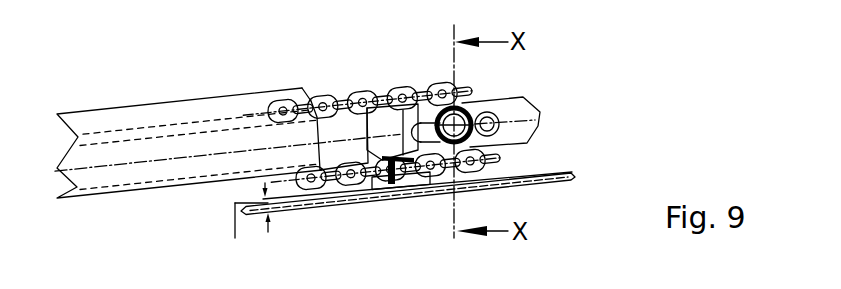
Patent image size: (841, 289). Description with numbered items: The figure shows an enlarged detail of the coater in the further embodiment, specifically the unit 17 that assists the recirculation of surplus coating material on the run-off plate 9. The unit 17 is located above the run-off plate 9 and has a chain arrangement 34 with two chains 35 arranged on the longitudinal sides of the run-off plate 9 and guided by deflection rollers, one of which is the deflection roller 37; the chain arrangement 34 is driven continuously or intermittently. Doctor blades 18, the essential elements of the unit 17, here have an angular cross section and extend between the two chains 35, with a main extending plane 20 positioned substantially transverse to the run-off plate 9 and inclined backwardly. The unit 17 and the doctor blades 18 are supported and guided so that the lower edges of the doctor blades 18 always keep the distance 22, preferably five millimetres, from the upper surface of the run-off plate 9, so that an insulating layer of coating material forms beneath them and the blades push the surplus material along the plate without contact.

The unit 17 is at (190, 84).
The chain arrangement 34 is at (315, 76).
The chains 35 is at (367, 93).
The deflection roller 37 is at (487, 101).
The run-off plate 9 is at (337, 196).
The distance 22 is at (248, 225).
The main extending plane 20 is at (377, 186).
The doctor blades 18 is at (402, 176).